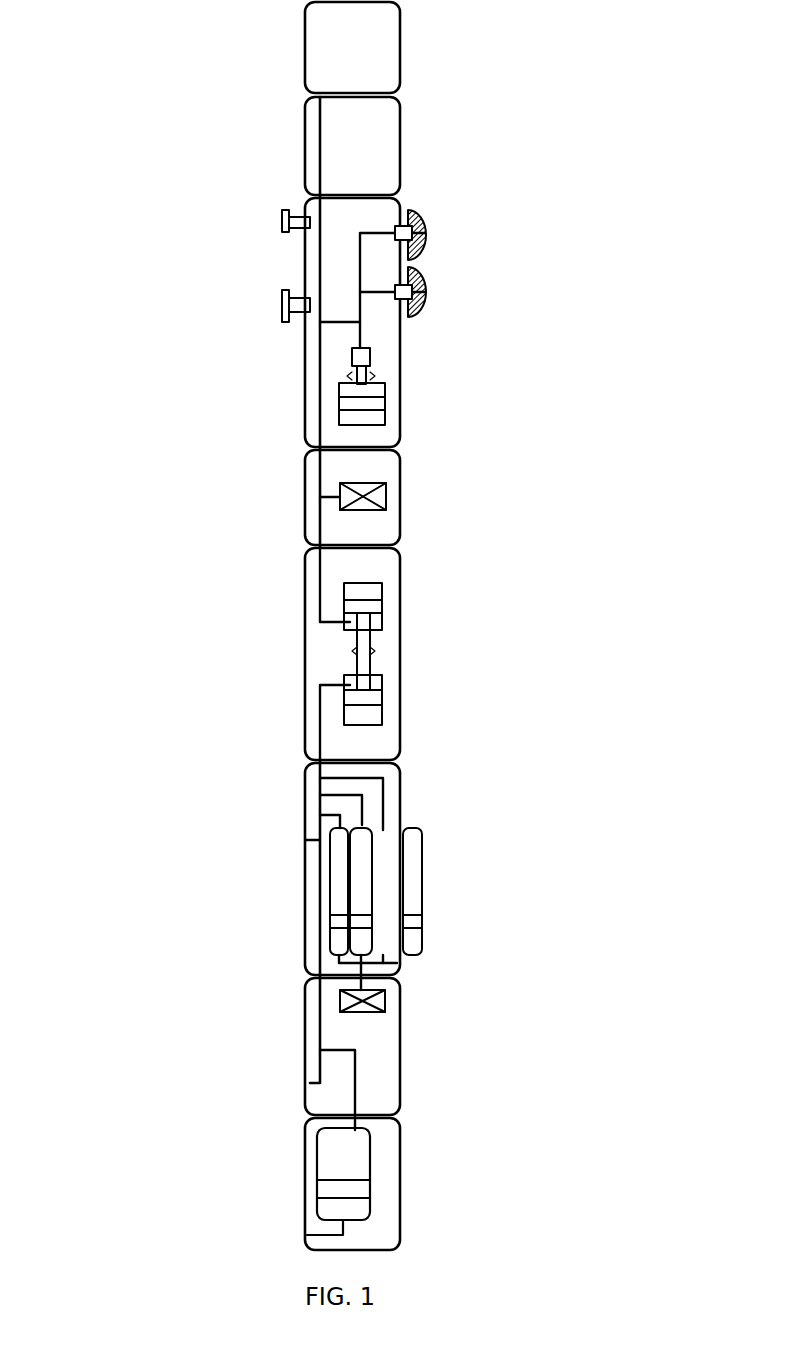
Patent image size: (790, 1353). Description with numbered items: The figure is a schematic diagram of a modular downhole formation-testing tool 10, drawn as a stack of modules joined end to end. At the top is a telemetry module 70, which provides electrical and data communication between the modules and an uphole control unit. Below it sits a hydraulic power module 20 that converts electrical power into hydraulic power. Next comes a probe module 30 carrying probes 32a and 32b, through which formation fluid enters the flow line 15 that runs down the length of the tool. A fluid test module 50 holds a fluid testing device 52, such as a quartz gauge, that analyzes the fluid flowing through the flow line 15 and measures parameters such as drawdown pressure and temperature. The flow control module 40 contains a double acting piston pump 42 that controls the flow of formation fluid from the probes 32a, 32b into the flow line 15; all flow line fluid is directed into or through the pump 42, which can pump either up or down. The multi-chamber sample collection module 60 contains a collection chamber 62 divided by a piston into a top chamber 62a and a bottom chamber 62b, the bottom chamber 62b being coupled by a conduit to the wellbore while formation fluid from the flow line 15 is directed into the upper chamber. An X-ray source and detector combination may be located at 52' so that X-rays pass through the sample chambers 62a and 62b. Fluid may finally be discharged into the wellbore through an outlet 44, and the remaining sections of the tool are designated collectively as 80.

The downhole tool 10 is at (235, 70).
The flow line 15 is at (313, 373).
The hydraulic power module 20 is at (423, 153).
The probe module 30 is at (428, 360).
The probe 32a is at (430, 225).
The probe 32b is at (432, 297).
The flow control module 40 is at (425, 655).
The pump 42 is at (345, 650).
The outlet 44 is at (310, 1080).
The fluid test module 50 is at (425, 498).
The fluid testing device 52 is at (297, 481).
The X-ray source and detector combination 52' is at (300, 1015).
The multi-chamber sample collection module 60 is at (425, 790).
The chamber 62 is at (413, 888).
The top chamber 62a is at (335, 868).
The bottom chamber 62b is at (340, 948).
The telemetry module 70 is at (425, 50).
The other sections 80 is at (425, 1050).